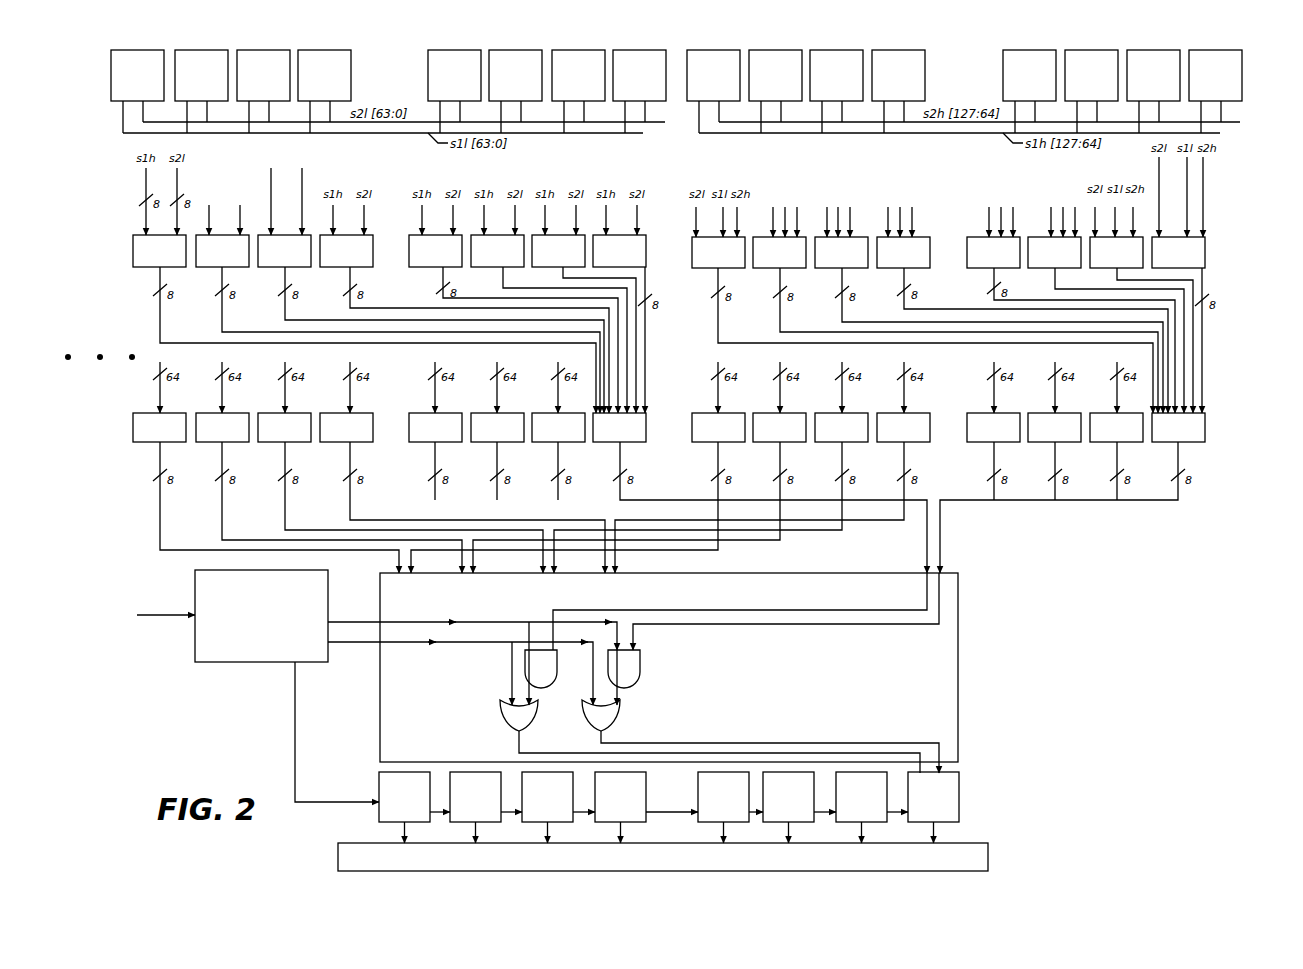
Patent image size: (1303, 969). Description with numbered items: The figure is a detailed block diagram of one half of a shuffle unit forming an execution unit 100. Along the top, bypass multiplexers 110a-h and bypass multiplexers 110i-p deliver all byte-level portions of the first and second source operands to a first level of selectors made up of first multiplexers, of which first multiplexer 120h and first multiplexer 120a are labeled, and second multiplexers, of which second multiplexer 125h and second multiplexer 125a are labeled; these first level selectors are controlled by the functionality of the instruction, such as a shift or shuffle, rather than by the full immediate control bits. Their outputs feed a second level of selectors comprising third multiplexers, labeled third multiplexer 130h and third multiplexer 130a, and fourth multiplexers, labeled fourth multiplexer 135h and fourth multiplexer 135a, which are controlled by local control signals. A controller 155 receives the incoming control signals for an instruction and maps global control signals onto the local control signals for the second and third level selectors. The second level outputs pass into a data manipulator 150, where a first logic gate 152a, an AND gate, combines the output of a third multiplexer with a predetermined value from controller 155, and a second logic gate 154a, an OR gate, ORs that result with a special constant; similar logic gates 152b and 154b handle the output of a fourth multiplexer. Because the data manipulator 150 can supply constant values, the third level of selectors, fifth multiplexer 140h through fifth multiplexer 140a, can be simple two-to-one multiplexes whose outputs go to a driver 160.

The execution unit 100 is at (1078, 574).
The bypass multiplexers 110a-h is at (380, 60).
The bypass multiplexers 110i-p is at (958, 60).
The first multiplexer 120h is at (690, 247).
The first multiplexer 120a is at (1205, 253).
The second multiplexer 125h is at (133, 250).
The second multiplexer 125a is at (647, 250).
The third multiplexer 130h is at (705, 412).
The third multiplexer 130a is at (1205, 428).
The fourth multiplexer 135h is at (133, 428).
The fourth multiplexer 135a is at (634, 442).
The fifth multiplexer 140h is at (379, 784).
The fifth multiplexer 140a is at (959, 797).
The data manipulator 150 is at (958, 690).
The first logic gate 152a is at (640, 668).
The logic gate 152b is at (525, 668).
The second logic gate 154a is at (620, 705).
The logic gate 154b is at (500, 705).
The controller 155 is at (195, 588).
The driver 160 is at (988, 857).